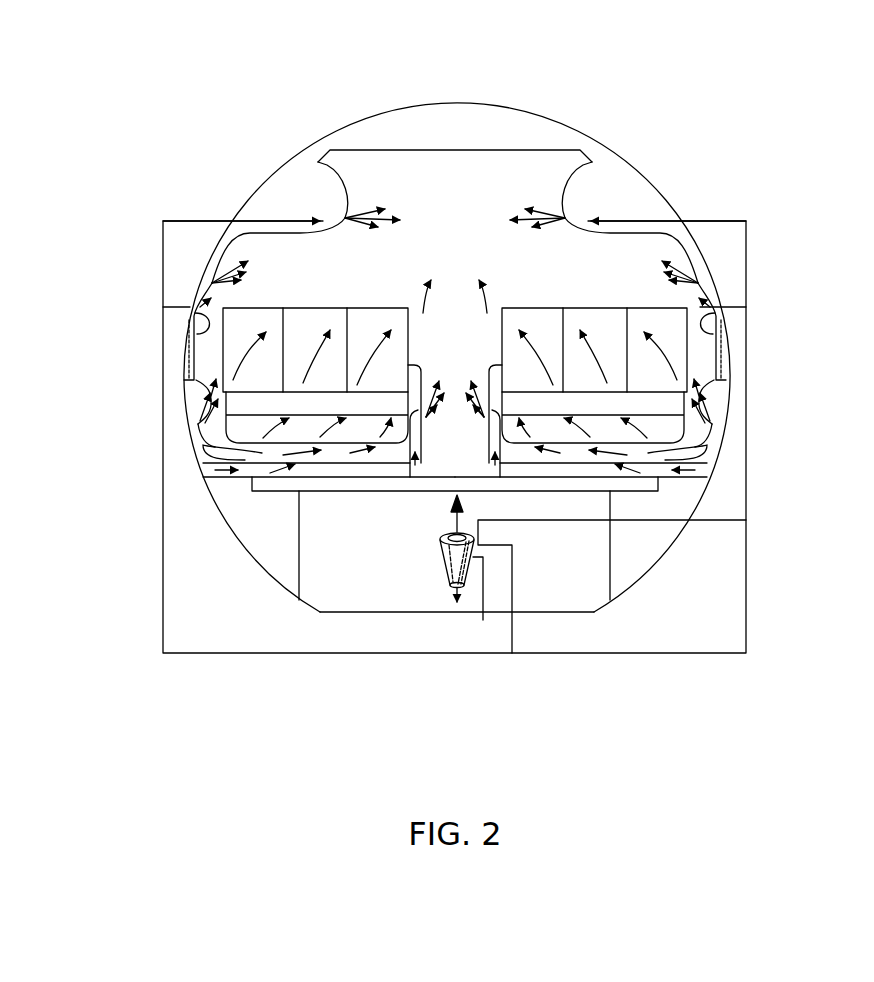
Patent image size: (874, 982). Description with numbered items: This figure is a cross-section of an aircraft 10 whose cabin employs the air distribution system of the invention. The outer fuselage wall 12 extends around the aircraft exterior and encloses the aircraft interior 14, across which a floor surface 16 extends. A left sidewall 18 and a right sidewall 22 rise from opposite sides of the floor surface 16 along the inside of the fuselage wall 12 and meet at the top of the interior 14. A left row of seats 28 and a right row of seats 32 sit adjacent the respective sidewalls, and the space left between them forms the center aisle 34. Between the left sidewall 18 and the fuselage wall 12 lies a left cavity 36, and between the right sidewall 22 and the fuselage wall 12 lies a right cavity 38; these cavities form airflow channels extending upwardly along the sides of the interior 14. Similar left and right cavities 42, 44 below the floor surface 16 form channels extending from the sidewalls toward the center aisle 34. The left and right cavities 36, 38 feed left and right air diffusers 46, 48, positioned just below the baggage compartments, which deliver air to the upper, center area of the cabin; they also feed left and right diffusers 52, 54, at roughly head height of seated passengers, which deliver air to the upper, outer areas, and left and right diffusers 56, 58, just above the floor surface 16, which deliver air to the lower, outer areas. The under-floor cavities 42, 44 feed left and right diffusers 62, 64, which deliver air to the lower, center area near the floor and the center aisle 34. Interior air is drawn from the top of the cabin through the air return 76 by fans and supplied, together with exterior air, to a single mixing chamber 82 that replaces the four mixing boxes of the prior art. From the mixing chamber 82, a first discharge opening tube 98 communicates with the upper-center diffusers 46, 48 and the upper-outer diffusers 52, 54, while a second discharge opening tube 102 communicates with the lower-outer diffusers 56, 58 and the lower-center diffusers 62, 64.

The aircraft 10 is at (700, 158).
The outer fuselage wall 12 is at (676, 212).
The aircraft interior 14 is at (449, 245).
The floor surface 16 is at (453, 465).
The left sidewall 18 is at (188, 342).
The right sidewall 22 is at (716, 330).
The left row of seats 28 is at (307, 305).
The right row of seats 32 is at (600, 305).
The center aisle 34 is at (463, 418).
The left cavity 36 is at (181, 396).
The right cavity 38 is at (720, 390).
The left cavity 42 is at (203, 473).
The right cavity 44 is at (713, 470).
The left air diffuser 46 is at (346, 218).
The right air diffuser 48 is at (565, 218).
The left air diffuser 52 is at (212, 283).
The right air diffuser 54 is at (692, 283).
The left air diffuser 56 is at (190, 413).
The right air diffuser 58 is at (718, 413).
The left diffuser 62 is at (420, 412).
The right diffuser 64 is at (512, 417).
The air return 76 is at (459, 145).
The mixing chamber 82 is at (443, 578).
The first discharge opening tube 98 is at (477, 537).
The second discharge opening tube 102 is at (457, 532).